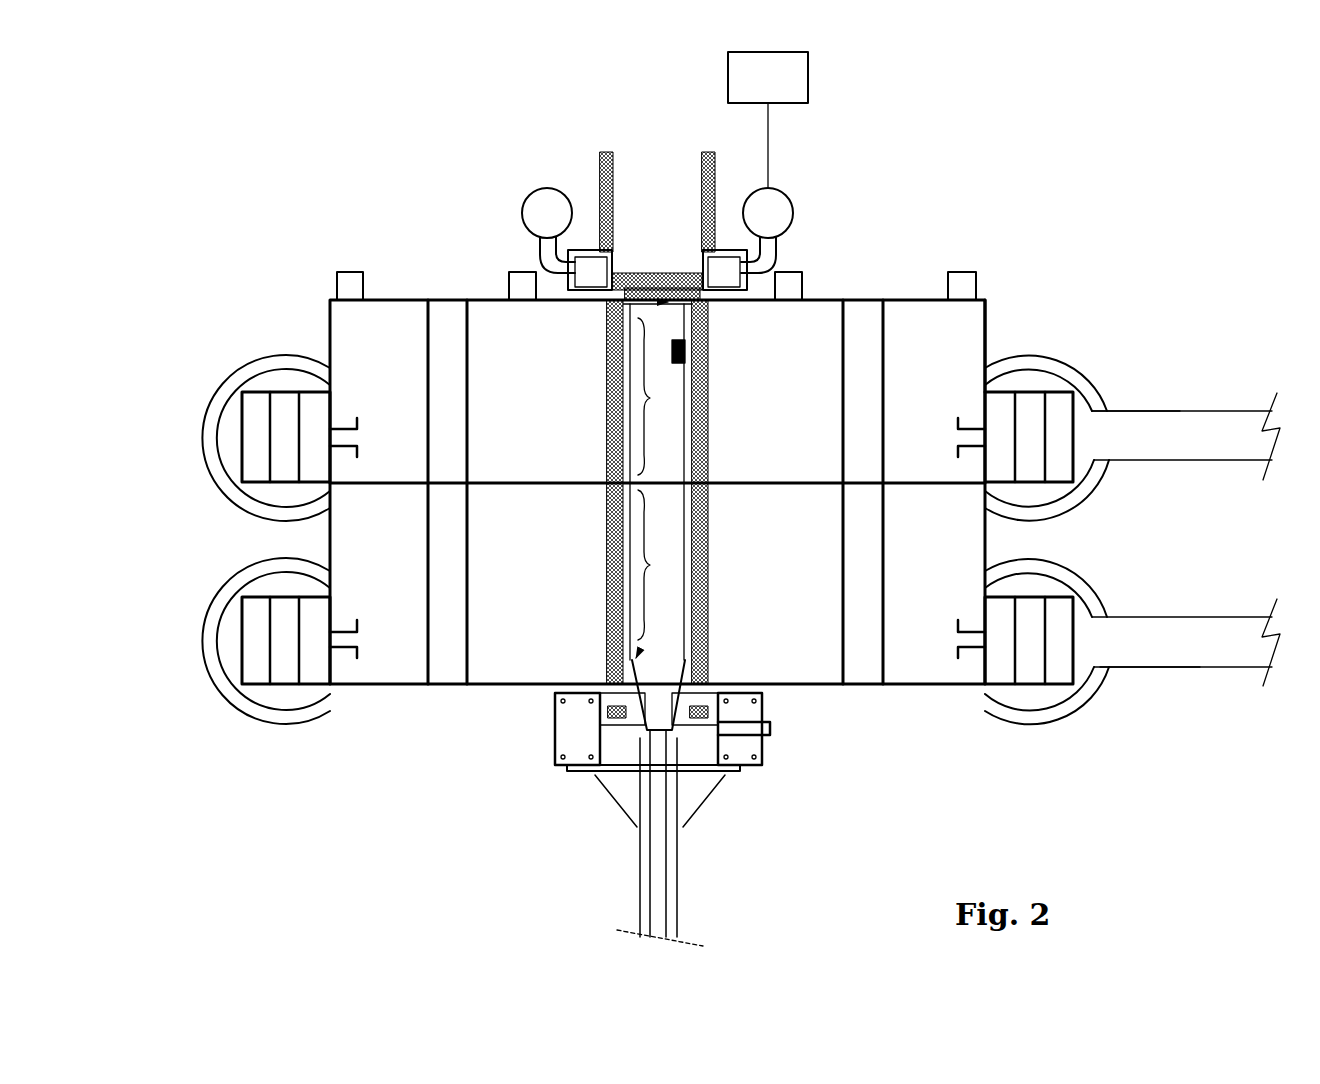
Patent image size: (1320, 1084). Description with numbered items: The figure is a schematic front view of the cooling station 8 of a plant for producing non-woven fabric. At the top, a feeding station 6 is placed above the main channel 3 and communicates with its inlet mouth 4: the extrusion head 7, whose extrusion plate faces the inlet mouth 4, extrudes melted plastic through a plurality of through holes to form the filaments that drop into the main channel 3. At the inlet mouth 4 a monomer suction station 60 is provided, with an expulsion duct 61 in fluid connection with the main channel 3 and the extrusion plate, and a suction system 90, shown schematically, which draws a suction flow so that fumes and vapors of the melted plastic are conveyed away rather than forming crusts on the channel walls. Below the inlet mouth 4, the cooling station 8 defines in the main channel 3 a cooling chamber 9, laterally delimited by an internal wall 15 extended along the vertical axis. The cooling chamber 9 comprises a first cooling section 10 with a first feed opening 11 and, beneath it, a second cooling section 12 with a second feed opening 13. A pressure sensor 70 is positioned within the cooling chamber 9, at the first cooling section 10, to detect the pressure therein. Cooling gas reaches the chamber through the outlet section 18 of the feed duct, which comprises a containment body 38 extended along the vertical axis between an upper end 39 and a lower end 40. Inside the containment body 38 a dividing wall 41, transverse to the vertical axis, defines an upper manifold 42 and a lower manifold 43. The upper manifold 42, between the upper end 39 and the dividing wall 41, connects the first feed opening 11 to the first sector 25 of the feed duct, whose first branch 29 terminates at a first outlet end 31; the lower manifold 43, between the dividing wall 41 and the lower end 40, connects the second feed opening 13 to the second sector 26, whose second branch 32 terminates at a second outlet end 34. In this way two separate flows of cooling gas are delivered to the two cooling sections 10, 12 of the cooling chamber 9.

The main channel 3 is at (636, 887).
The inlet mouth 4 is at (682, 303).
The feeding station 6 is at (570, 130).
The extrusion head 7 is at (652, 192).
The cooling station 8 is at (272, 225).
The cooling chamber 9 is at (667, 491).
The first cooling section 10 is at (657, 396).
The first feed opening 11 is at (712, 363).
The second cooling section 12 is at (656, 574).
The second feed opening 13 is at (710, 553).
The internal wall 15 is at (600, 523).
The outlet section 18 is at (1042, 243).
The first sector 25 is at (1162, 390).
The second sector 26 is at (1170, 678).
The first branch 29 is at (1228, 440).
The first outlet end 31 is at (1102, 467).
The second branch 32 is at (1203, 640).
The second outlet end 34 is at (1100, 597).
The containment body 38 is at (390, 690).
The upper end 39 is at (480, 298).
The lower end 40 is at (440, 688).
The dividing wall 41 is at (385, 487).
The upper manifold 42 is at (945, 378).
The lower manifold 43 is at (945, 568).
The monomer suction station 60 is at (825, 192).
The expulsion duct 61 is at (770, 258).
The pressure sensor 70 is at (672, 350).
The suction system 90 is at (728, 80).